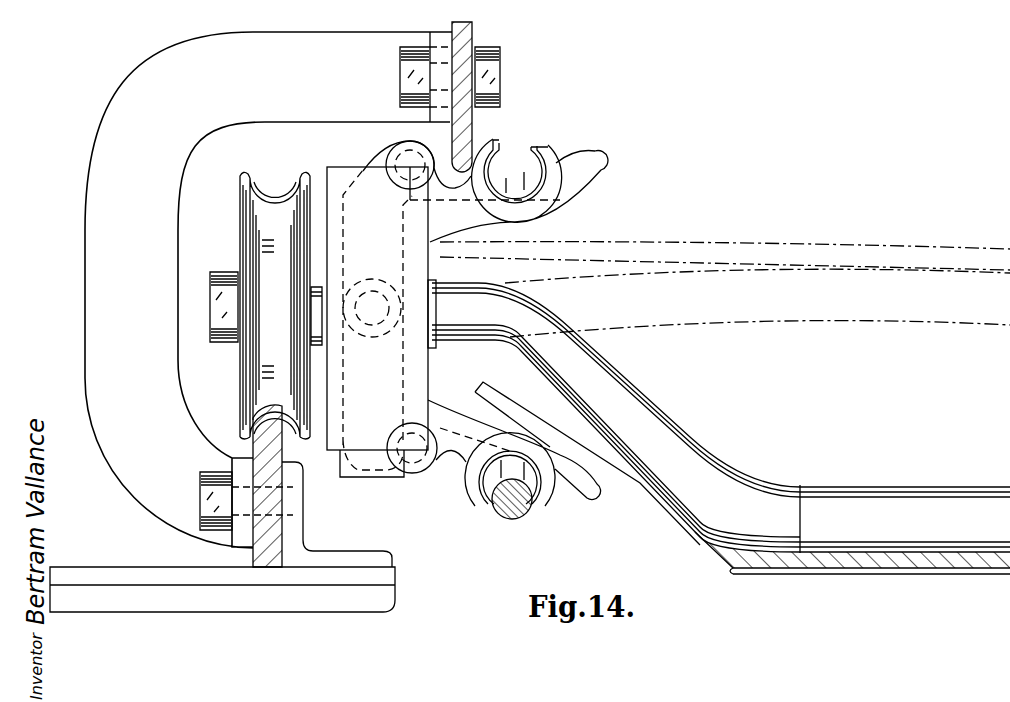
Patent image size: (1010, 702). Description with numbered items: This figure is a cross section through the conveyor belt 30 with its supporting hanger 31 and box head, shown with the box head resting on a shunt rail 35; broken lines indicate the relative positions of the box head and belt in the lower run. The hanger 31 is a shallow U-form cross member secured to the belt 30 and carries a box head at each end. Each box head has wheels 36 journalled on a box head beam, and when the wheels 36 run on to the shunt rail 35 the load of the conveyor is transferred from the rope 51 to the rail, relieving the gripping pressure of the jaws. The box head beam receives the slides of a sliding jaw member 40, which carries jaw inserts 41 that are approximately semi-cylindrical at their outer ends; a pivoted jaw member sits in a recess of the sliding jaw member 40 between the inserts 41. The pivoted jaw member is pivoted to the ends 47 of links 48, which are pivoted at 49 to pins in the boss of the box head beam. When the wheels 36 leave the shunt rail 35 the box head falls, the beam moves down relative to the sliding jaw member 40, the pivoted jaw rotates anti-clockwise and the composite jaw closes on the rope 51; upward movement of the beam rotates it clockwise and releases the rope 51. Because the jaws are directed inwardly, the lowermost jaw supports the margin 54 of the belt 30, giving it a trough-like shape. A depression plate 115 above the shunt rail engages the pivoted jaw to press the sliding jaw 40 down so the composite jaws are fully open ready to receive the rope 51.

The conveyor belt 30 is at (936, 567).
The hanger 31 is at (727, 475).
The shunt rail 35 is at (278, 445).
The wheel 36 is at (242, 216).
The sliding jaw member 40 is at (455, 232).
The jaw insert 41 is at (540, 148).
The link end 47 is at (408, 158).
The link 48 is at (362, 184).
The link pivot 49 is at (372, 292).
The rope 51 is at (523, 518).
The belt margin 54 is at (490, 384).
The depression plate 115 is at (472, 143).